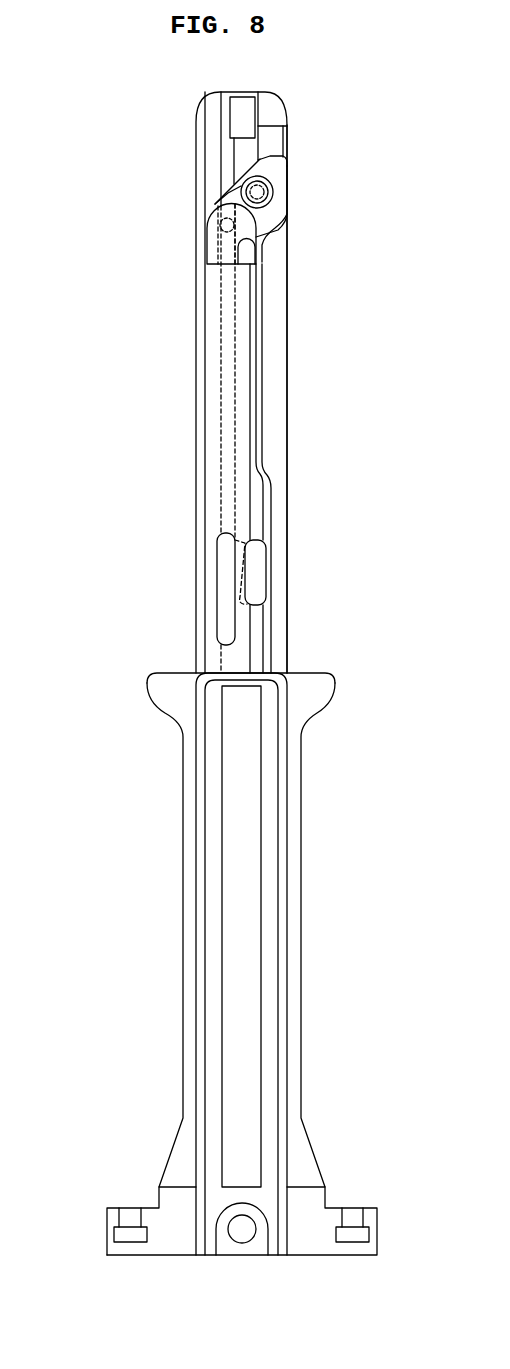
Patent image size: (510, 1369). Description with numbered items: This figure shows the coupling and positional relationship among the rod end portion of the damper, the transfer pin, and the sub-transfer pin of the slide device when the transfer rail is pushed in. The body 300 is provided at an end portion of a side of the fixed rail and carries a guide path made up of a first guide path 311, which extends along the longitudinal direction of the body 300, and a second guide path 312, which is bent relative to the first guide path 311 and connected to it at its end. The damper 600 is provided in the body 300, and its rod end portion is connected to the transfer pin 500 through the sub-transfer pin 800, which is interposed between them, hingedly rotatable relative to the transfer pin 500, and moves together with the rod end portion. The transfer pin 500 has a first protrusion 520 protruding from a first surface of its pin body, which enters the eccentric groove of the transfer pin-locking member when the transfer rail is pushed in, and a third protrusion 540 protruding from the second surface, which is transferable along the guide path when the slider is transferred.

The body 300 is at (182, 1043).
The first guide path 311 is at (227, 463).
The second guide path 312 is at (235, 190).
The transfer pin 500 is at (282, 177).
The first protrusion 520 is at (283, 158).
The third protrusion 540 is at (234, 224).
The damper 600 is at (232, 898).
The sub-transfer pin 800 is at (208, 239).